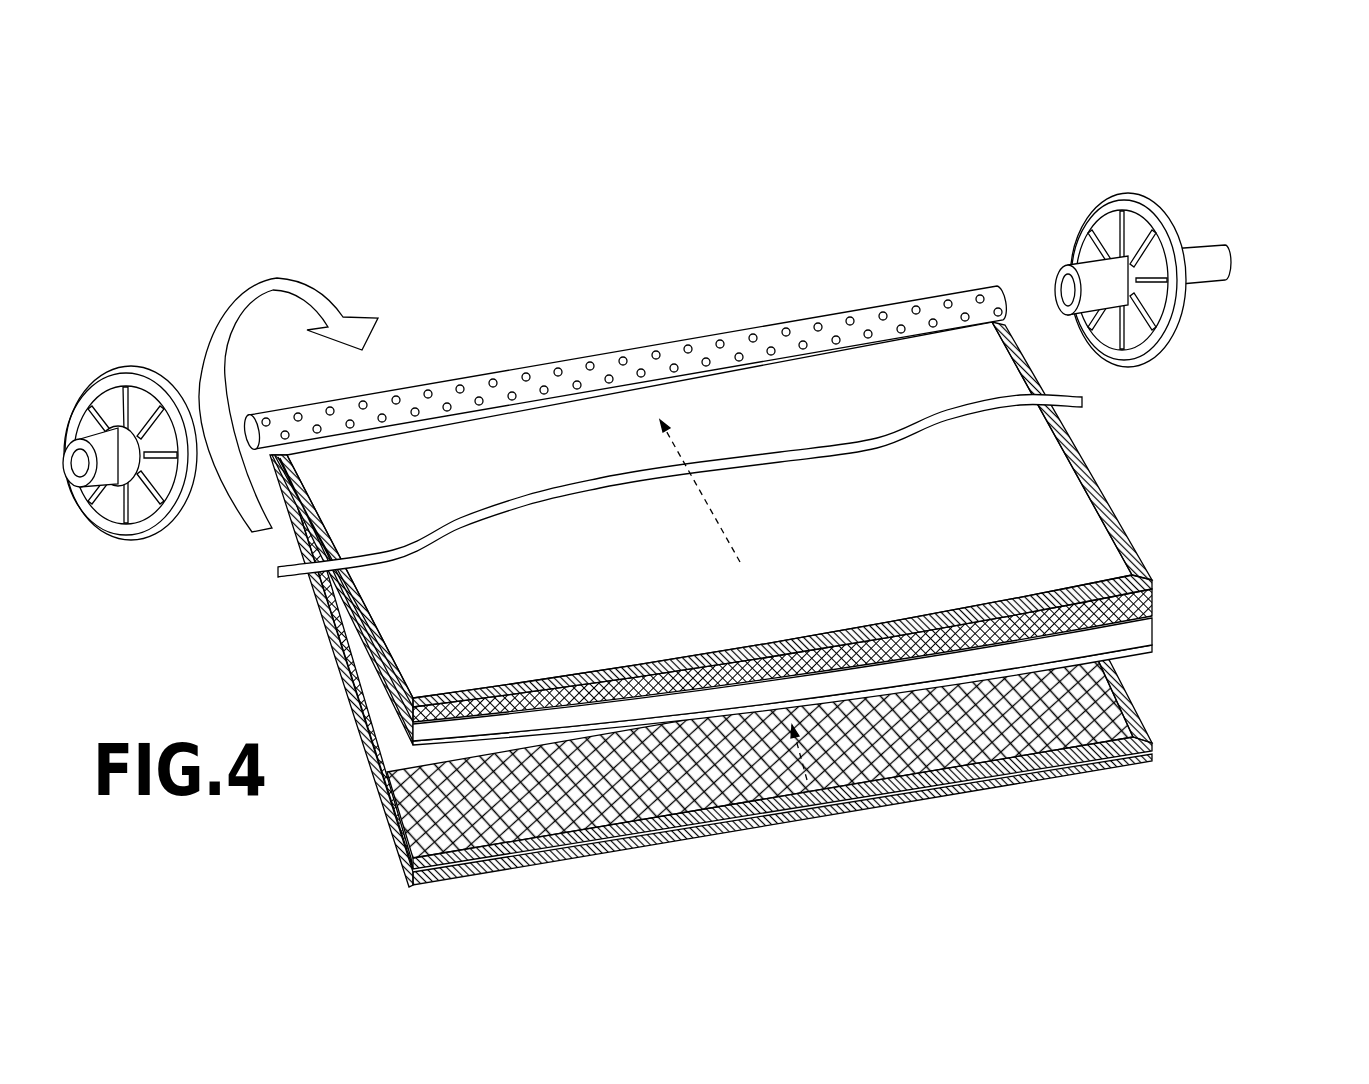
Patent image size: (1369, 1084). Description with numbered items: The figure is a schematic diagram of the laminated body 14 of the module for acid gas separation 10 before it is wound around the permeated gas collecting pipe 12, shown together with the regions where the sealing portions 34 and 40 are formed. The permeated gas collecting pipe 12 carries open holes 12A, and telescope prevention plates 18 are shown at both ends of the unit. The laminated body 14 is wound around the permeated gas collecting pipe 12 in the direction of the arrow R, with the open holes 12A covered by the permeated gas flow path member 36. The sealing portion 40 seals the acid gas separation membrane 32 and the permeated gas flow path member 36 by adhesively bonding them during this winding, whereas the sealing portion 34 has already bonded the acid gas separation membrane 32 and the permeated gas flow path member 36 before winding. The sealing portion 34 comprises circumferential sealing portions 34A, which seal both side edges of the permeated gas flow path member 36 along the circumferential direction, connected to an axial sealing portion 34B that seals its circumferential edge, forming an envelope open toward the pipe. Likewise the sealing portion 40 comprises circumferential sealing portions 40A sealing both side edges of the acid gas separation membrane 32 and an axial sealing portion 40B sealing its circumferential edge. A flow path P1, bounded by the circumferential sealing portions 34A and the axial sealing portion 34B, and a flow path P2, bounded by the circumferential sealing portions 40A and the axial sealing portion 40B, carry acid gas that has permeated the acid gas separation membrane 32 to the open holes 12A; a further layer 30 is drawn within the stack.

The module for acid gas separation 10 is at (1150, 132).
The permeated gas collecting pipe 12 is at (624, 341).
The open holes 12A is at (850, 317).
The laminated body 14 is at (811, 604).
The telescope prevention plates 18 is at (137, 540).
The core layer 30 is at (853, 675).
The acid gas separation membrane 32 is at (1153, 583).
The sealing portion 34 is at (787, 662).
The circumferential sealing portions 34A is at (1137, 688).
The axial sealing portion 34B is at (1137, 727).
The permeated gas flow path member 36 is at (1153, 752).
The sealing portion 40 is at (783, 533).
The circumferential sealing portions 40A is at (1137, 520).
The axial sealing portion 40B is at (1137, 555).
The arrow R is at (240, 283).
The flow path P1 is at (807, 780).
The flow path P2 is at (725, 528).